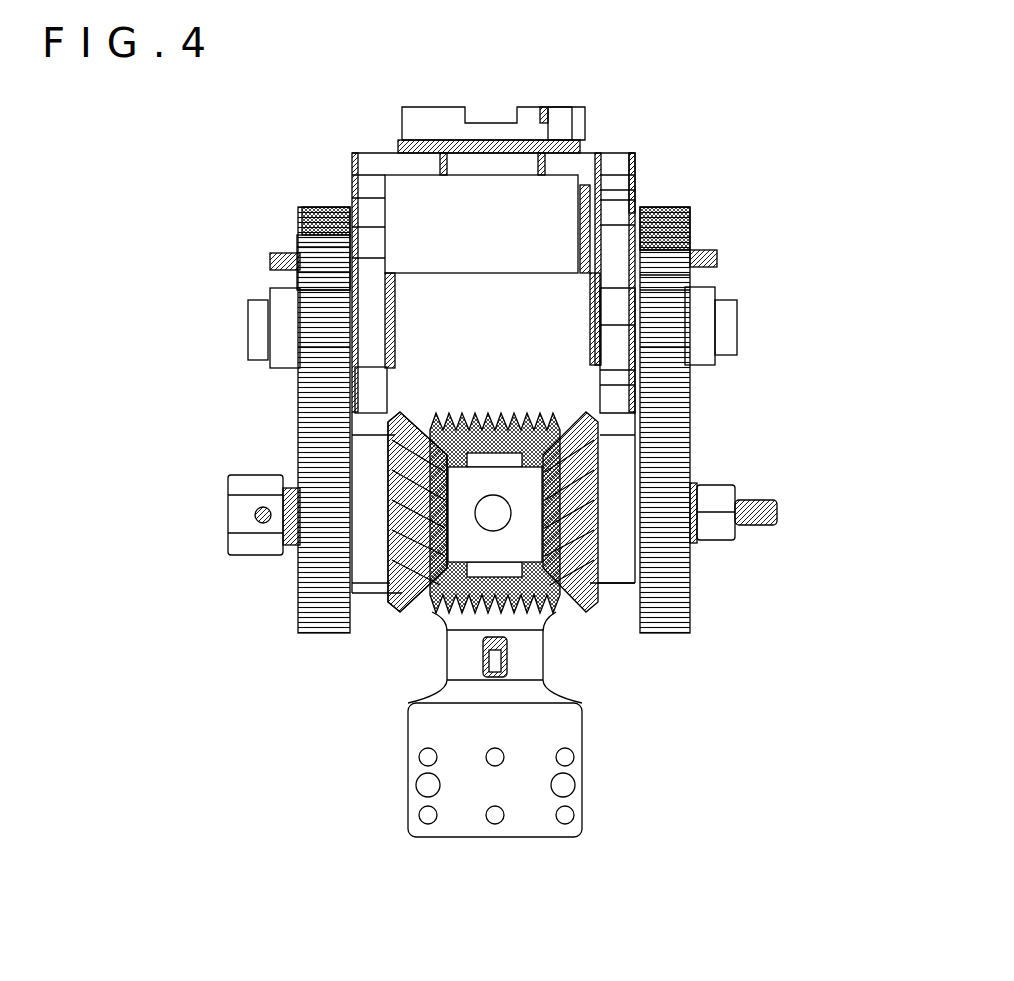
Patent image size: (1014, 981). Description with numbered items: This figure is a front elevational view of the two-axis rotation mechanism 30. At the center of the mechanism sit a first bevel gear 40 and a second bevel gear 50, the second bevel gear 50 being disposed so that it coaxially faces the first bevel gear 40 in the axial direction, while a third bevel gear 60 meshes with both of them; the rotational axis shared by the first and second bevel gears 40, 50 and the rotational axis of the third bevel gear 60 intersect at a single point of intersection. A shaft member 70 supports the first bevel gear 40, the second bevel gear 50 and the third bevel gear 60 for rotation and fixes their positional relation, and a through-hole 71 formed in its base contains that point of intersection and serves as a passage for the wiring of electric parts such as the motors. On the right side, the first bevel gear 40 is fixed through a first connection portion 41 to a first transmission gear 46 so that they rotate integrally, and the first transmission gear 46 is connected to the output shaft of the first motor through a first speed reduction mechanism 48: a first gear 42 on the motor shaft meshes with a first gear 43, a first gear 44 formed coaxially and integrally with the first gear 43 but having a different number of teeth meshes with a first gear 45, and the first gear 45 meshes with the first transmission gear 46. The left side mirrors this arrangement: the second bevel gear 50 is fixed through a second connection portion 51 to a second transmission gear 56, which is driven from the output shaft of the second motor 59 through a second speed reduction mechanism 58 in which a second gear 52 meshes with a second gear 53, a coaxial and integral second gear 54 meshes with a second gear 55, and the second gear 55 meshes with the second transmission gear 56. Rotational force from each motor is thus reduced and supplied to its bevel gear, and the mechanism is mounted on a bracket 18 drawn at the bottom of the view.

The mounting bracket 18 is at (570, 800).
The two-axis rotation mechanism 30 is at (515, 918).
The first bevel gear 40 is at (560, 600).
The first connection portion 41 is at (622, 583).
The first gear 42 is at (680, 207).
The first gear 43 is at (637, 165).
The first gear 44 is at (690, 272).
The first gear 45 is at (688, 368).
The first transmission gear 46 is at (670, 633).
The first speed reduction mechanism 48 is at (818, 287).
The second bevel gear 50 is at (420, 600).
The second connection portion 51 is at (372, 583).
The second gear 52 is at (305, 210).
The second gear 53 is at (347, 205).
The second gear 54 is at (293, 240).
The second gear 55 is at (300, 378).
The second transmission gear 56 is at (322, 632).
The second speed reduction mechanism 58 is at (170, 290).
The second motor 59 is at (422, 213).
The third bevel gear 60 is at (557, 425).
The shaft member 70 is at (444, 418).
The through-hole 71 is at (467, 480).